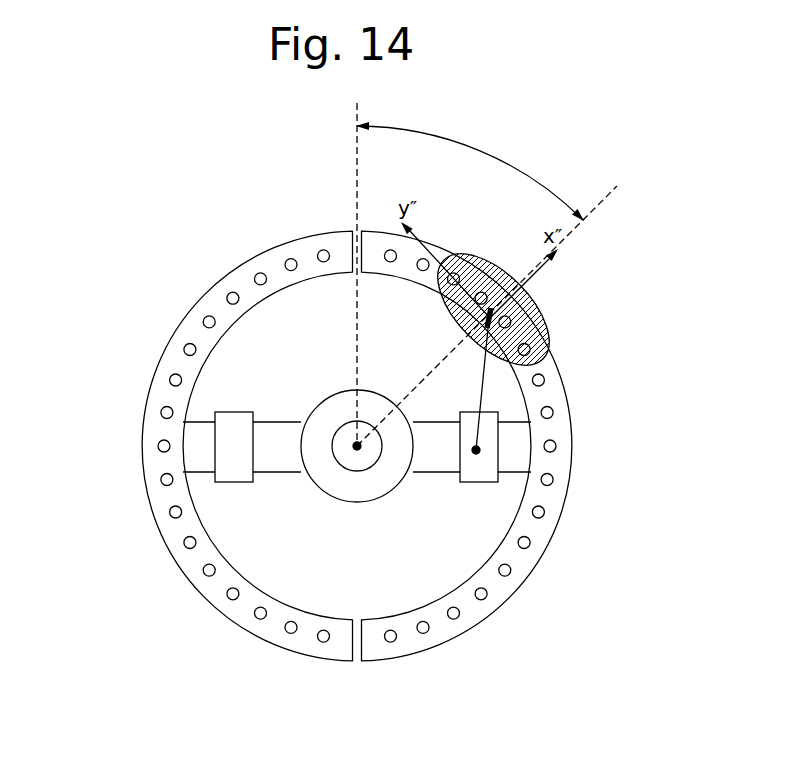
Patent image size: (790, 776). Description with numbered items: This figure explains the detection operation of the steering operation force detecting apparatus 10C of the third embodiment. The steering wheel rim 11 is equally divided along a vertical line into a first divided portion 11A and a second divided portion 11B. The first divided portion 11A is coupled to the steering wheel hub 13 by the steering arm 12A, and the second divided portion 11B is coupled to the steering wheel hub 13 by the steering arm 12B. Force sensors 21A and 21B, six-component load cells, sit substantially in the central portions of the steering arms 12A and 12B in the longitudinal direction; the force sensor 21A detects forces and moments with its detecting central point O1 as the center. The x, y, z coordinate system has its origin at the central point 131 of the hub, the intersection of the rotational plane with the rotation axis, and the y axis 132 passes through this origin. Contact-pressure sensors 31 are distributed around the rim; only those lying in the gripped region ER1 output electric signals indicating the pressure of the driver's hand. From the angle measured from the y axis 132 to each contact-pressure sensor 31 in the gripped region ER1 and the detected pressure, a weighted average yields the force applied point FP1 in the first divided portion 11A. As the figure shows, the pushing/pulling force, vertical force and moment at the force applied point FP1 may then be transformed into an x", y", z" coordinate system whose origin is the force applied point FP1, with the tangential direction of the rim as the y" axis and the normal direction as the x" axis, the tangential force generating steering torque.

The steering operation force detecting apparatus 10C is at (157, 212).
The steering wheel rim 11 is at (370, 234).
The first divided portion 11A is at (557, 392).
The second divided portion 11B is at (157, 390).
The steering arm 12A is at (428, 430).
The steering arm 12B is at (275, 437).
The steering wheel hub 13 is at (363, 490).
The central point 131 is at (355, 443).
The y axis 132 is at (350, 316).
The force sensor 21A is at (468, 473).
The force sensor 21B is at (235, 467).
The contact-pressure sensor 31 is at (288, 259).
The detecting central point O1 is at (477, 453).
The force applied point FP1 is at (483, 317).
The gripped region ER1 is at (522, 288).